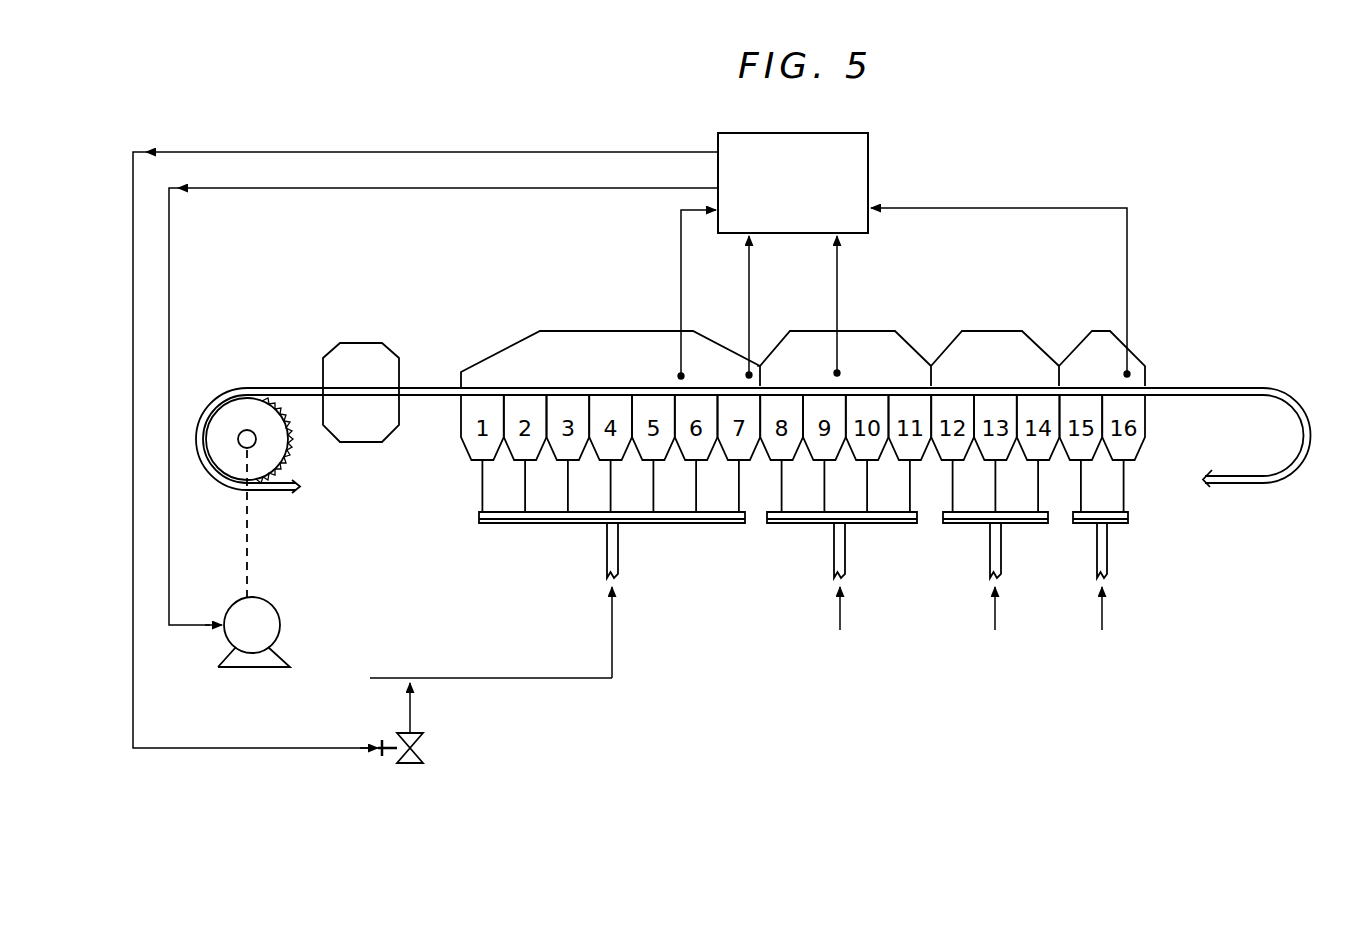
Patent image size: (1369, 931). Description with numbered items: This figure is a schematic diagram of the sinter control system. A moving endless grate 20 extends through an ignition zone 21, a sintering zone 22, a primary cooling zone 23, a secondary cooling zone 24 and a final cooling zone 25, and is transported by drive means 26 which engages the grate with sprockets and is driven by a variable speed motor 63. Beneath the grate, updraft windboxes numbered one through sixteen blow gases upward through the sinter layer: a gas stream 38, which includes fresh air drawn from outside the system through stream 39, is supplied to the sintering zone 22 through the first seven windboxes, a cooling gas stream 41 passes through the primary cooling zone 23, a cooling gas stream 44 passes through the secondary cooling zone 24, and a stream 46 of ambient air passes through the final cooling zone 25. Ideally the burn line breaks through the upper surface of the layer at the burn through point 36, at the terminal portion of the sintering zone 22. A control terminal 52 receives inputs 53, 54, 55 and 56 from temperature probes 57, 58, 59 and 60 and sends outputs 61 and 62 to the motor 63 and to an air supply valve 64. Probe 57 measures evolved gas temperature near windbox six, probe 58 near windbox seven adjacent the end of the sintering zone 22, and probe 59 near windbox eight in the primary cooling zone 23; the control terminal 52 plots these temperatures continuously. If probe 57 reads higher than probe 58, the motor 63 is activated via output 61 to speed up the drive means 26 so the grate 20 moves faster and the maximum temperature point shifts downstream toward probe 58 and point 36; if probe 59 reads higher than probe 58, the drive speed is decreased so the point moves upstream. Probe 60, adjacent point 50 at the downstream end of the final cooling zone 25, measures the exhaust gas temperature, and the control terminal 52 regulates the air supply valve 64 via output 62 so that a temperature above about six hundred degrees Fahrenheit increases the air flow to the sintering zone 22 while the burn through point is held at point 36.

The grate 20 is at (292, 387).
The ignition zone 21 is at (337, 343).
The sintering zone 22 is at (538, 329).
The primary cooling zone 23 is at (877, 330).
The secondary cooling zone 24 is at (1004, 330).
The final cooling zone 25 is at (1096, 330).
The drive means 26 is at (278, 449).
The burn through point 36 is at (758, 366).
The gas stream 38 is at (611, 630).
The air stream 39 is at (543, 680).
The cooling gas stream 41 is at (838, 612).
The cooling gas stream 44 is at (994, 612).
The ambient air stream 46 is at (1100, 612).
The point 50 is at (1147, 372).
The control terminal 52 is at (778, 195).
The input 53 is at (681, 279).
The input 54 is at (749, 302).
The input 55 is at (837, 280).
The input 56 is at (975, 207).
The temperature probe 57 is at (680, 375).
The temperature probe 58 is at (748, 374).
The temperature probe 59 is at (838, 372).
The temperature probe 60 is at (1128, 372).
The output 61 is at (366, 189).
The output 62 is at (427, 150).
The motor 63 is at (277, 606).
The air supply valve 64 is at (412, 764).